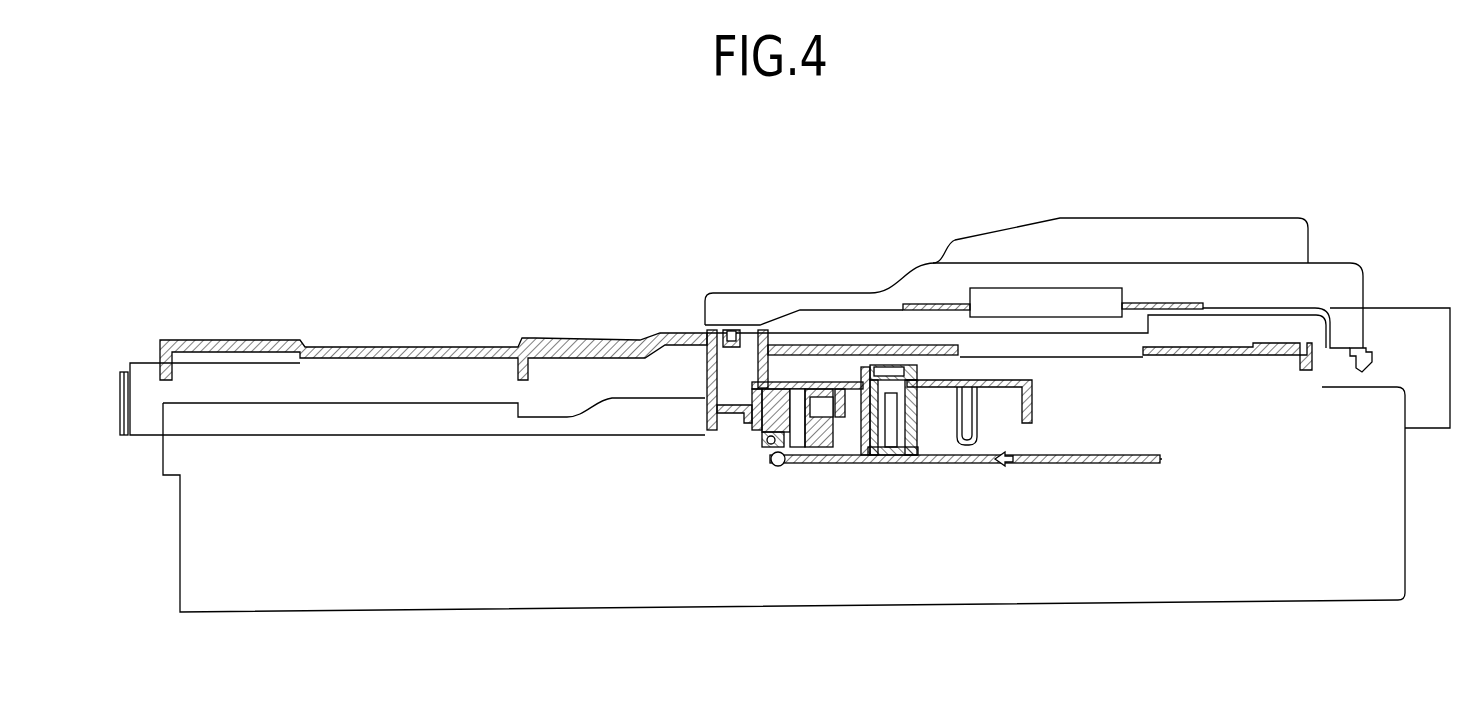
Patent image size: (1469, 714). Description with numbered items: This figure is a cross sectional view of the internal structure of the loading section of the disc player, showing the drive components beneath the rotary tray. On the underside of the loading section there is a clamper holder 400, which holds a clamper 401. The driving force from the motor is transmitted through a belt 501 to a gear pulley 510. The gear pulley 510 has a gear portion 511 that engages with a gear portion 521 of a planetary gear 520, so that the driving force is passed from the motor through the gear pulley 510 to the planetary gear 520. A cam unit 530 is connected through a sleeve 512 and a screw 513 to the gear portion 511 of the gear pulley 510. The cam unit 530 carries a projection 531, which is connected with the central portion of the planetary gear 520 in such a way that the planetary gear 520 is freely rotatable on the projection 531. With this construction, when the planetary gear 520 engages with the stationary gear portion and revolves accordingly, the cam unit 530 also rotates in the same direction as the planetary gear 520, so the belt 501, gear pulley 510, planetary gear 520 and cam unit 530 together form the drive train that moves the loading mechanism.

The clamper holder 400 is at (1333, 237).
The clamper 401 is at (1062, 305).
The belt 501 is at (1050, 455).
The gear pulley 510 is at (977, 463).
The gear portion 511 is at (916, 397).
The sleeve 512 is at (888, 458).
The screw 513 is at (884, 393).
The planetary gear 520 is at (706, 352).
The gear portion 521 is at (846, 380).
The cam unit 530 is at (940, 380).
The projection 531 is at (760, 446).